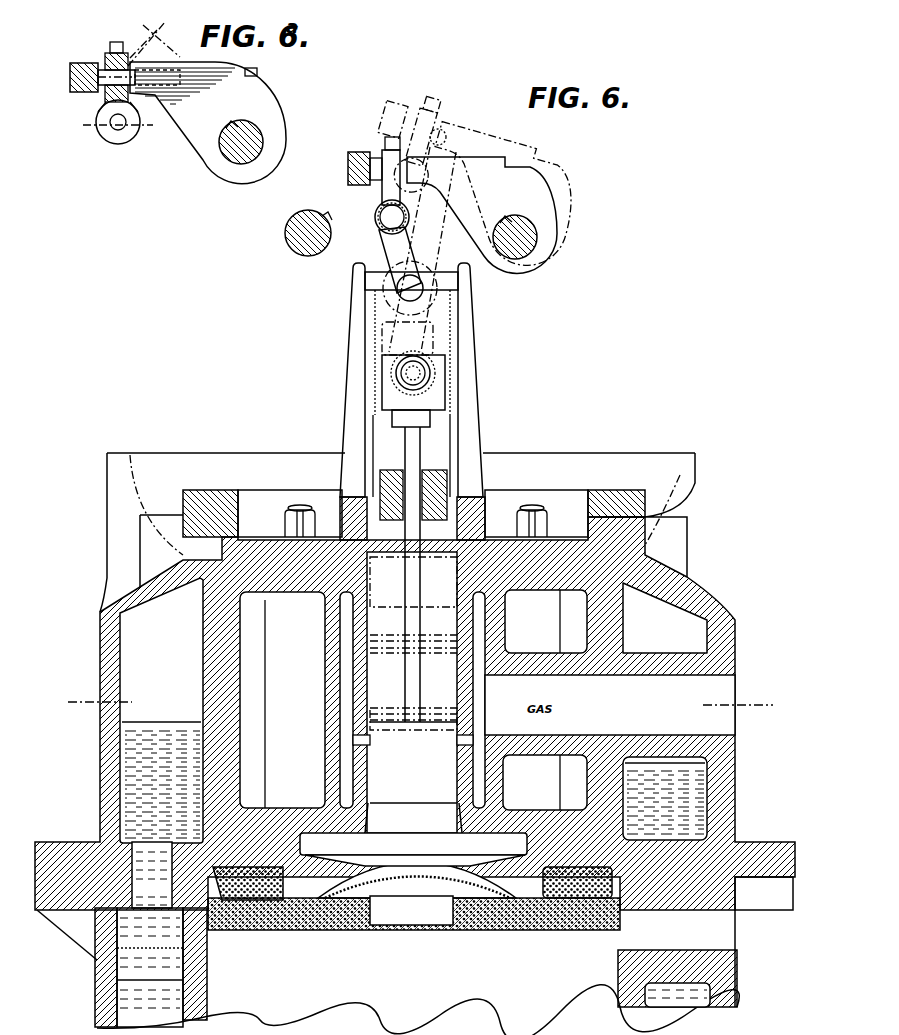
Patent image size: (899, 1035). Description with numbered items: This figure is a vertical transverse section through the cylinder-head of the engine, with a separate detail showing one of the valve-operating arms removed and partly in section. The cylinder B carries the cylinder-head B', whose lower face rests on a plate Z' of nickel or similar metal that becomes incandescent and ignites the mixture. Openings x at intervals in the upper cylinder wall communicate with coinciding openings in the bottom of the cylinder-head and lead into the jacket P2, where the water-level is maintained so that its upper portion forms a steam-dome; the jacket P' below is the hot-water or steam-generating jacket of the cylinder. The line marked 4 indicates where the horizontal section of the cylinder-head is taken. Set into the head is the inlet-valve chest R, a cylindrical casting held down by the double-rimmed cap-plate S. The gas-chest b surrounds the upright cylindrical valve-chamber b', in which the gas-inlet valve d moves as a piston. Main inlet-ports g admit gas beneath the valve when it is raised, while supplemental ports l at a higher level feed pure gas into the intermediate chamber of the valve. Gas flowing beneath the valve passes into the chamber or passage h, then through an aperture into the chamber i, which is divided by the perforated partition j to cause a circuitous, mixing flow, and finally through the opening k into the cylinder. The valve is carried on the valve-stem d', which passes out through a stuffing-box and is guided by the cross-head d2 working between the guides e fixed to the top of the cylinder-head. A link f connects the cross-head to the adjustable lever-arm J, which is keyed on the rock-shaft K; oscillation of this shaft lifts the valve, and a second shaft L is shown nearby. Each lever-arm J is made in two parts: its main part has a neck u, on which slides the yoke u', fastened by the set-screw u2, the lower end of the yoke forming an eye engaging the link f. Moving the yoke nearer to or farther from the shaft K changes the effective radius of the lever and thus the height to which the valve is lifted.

In FIG. 6A, the neck u is at (124, 63).
In FIG. 6A, the set-screw u2 is at (116, 42).
In FIG. 6A, the yoke u' is at (104, 117).
In FIG. 6A, the lever-arm J is at (208, 123).
In FIG. 6, the lever-arm J is at (472, 219).
In FIG. 6A, the rock-shaft K is at (228, 152).
In FIG. 6, the rock-shaft K is at (530, 256).
In FIG. 6, the shaft L is at (297, 236).
In FIG. 6, the link f is at (393, 247).
In FIG. 6, the guides e is at (409, 380).
In FIG. 6, the cross-head d2 is at (437, 393).
In FIG. 6, the valve-stem d' is at (423, 574).
In FIG. 6, the cap-plate S is at (228, 488).
In FIG. 6, the jacket P2 is at (413, 710).
In FIG. 6, the section line 4 is at (420, 704).
In FIG. 6, the cylinder-head B' is at (415, 713).
In FIG. 6, the gas-chest b is at (398, 700).
In FIG. 6, the supplemental ports l is at (363, 652).
In FIG. 6, the valve-chamber b' is at (376, 730).
In FIG. 6, the inlet-ports g is at (357, 745).
In FIG. 6, the gas-inlet valve d is at (413, 695).
In FIG. 6, the inlet-valve chest R is at (512, 596).
In FIG. 6, the chamber or passage h is at (413, 845).
In FIG. 6, the chamber i is at (415, 876).
In FIG. 6, the perforated partition j is at (417, 893).
In FIG. 6, the opening k is at (433, 923).
In FIG. 6, the openings x is at (152, 875).
In FIG. 6, the plate Z' is at (412, 914).
In FIG. 6, the cylinder B is at (388, 971).
In FIG. 6, the hot-water or steam-generating jacket P' is at (150, 967).